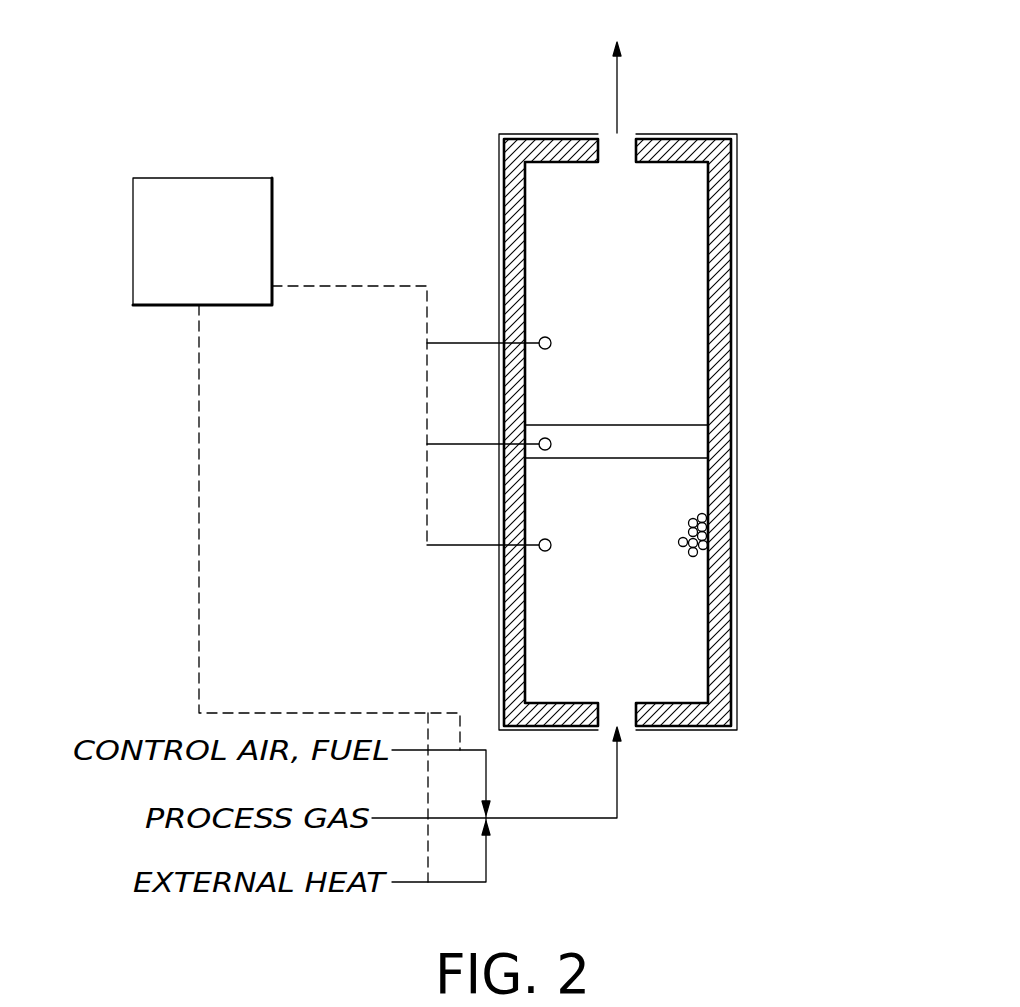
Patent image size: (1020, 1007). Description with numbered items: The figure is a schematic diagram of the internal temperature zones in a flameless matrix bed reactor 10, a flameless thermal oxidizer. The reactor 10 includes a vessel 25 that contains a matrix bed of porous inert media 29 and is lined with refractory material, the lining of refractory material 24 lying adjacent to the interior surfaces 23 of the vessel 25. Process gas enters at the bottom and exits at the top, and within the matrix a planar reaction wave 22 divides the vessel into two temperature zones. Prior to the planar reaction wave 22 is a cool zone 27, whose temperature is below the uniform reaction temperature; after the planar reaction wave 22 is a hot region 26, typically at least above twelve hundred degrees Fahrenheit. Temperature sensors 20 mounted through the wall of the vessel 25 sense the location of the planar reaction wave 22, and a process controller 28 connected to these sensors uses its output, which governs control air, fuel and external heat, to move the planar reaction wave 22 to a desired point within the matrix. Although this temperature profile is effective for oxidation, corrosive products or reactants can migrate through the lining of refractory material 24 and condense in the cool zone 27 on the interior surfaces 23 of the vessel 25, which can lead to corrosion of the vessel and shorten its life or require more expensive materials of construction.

The flameless matrix bed reactor 10 is at (735, 108).
The temperature sensors 20 is at (462, 345).
The planar reaction wave 22 is at (682, 442).
The interior surfaces 23 is at (500, 243).
The lining of refractory material 24 is at (576, 167).
The vessel 25 is at (737, 250).
The hot region 26 is at (652, 326).
The cool zone 27 is at (652, 618).
The process controller 28 is at (153, 229).
The matrix bed of porous inert media 29 is at (705, 535).